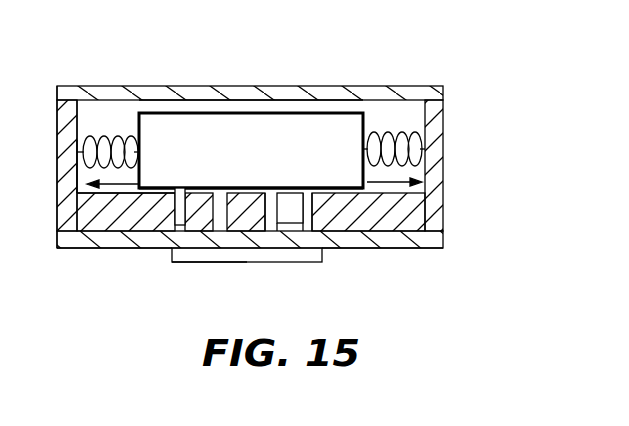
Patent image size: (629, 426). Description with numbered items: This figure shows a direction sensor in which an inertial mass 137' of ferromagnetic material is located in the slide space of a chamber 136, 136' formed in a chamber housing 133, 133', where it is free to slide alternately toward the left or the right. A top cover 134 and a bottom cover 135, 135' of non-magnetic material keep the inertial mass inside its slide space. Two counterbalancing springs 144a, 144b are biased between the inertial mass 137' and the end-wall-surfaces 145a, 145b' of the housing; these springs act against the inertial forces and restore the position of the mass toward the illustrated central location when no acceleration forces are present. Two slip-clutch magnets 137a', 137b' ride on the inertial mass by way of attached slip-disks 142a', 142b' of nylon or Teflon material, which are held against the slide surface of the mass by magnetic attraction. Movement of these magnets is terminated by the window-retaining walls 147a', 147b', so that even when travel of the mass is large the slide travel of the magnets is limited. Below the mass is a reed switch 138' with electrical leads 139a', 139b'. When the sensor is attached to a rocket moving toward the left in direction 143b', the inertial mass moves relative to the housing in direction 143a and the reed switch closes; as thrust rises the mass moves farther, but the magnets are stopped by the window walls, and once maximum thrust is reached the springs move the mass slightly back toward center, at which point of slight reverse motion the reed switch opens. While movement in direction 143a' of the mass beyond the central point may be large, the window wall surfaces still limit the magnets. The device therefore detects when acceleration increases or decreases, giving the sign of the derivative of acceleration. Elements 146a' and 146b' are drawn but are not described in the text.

The top cover 134 is at (388, 83).
The chamber 136' is at (273, 52).
The chamber 136 is at (38, 165).
The direction 143a is at (28, 147).
The chamber housing 133 is at (38, 146).
The housing 133' is at (39, 172).
The end-wall-surface 145b' is at (418, 194).
The bottom cover 135 is at (221, 224).
The bottom cover 135' is at (89, 266).
The electrical lead 139b' is at (387, 302).
The reed switch 138' is at (276, 261).
The electrical lead 139a' is at (147, 305).
The direction 143b' is at (87, 258).
The slip-clutch magnet 137a' is at (126, 258).
The left pad 146a' is at (188, 252).
The window-retaining wall 147a' is at (251, 260).
The right pad wall 146b' is at (290, 250).
The direction 143a' is at (391, 257).
The window-retaining wall 147b' is at (351, 256).
The inertial mass 137' is at (259, 117).
The slip-clutch magnet 137b' is at (251, 119).
The slip-disk 142a' is at (210, 181).
The slip-disk 142b' is at (315, 179).
The counterbalancing spring 144a is at (97, 100).
The counterbalancing spring 144b is at (418, 117).
The end-wall-surface 145a is at (112, 60).